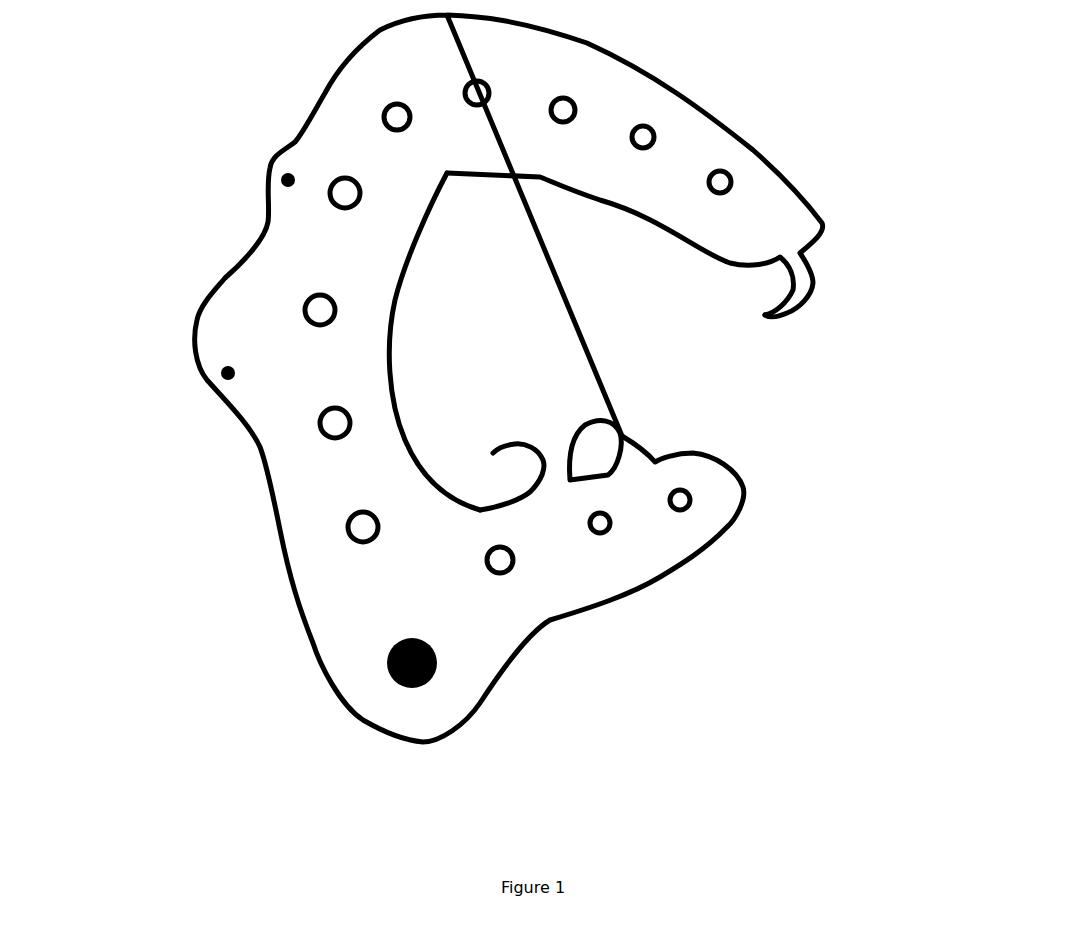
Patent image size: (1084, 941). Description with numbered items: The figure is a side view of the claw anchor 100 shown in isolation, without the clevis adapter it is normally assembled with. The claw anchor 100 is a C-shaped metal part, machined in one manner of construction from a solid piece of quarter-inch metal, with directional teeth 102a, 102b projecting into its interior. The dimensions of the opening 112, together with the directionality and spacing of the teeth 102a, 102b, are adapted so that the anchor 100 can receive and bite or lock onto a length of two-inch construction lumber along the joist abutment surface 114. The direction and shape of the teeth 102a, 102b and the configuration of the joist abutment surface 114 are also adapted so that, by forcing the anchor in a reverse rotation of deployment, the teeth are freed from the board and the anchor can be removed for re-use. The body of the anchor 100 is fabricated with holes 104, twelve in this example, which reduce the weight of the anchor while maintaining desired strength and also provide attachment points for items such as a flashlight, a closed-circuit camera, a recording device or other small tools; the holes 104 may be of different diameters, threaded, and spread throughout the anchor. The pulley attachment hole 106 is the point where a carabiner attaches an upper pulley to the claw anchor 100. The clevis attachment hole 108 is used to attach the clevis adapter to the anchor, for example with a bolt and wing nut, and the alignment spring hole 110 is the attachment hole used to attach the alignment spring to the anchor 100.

The claw anchor 100 is at (233, 667).
The directional tooth 102a is at (537, 445).
The directional tooth 102b is at (523, 363).
The holes 104 is at (516, 566).
The pulley attachment hole 106 is at (436, 684).
The clevis attachment hole 108 is at (221, 380).
The alignment spring hole 110 is at (279, 179).
The opening 112 is at (772, 322).
The joist abutment surface 114 is at (410, 291).